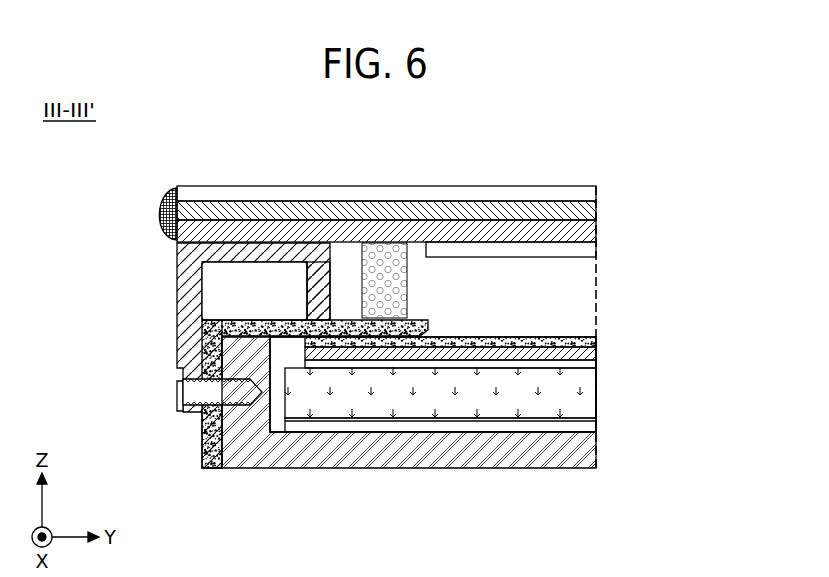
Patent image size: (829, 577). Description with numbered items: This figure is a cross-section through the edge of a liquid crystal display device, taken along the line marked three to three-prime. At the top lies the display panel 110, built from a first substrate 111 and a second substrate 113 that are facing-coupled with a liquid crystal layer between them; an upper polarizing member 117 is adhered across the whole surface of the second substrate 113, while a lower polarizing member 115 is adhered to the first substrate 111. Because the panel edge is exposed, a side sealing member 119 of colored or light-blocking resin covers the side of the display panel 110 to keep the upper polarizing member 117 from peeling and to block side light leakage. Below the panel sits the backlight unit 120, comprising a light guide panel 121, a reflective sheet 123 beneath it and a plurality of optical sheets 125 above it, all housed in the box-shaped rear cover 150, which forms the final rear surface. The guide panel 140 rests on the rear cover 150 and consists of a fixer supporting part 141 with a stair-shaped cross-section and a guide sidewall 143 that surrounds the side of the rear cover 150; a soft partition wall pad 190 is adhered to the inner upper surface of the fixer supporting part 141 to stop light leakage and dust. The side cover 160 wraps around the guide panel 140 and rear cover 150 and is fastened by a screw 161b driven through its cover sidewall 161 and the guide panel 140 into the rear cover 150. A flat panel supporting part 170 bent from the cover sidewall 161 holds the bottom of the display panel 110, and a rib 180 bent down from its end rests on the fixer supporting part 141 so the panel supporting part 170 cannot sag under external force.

The display panel 110 is at (451, 217).
The upper polarizing member 117 is at (597, 192).
The first substrate 111 is at (597, 213).
The second substrate 113 is at (597, 232).
The lower polarizing member 115 is at (597, 250).
The side sealing member 119 is at (161, 213).
The side cover 160 is at (227, 355).
The panel supporting part 170 is at (253, 260).
The rib 180 is at (307, 298).
The cover sidewall 161 is at (200, 352).
The screw 161b is at (177, 397).
The partition wall pad 190 is at (408, 287).
The rear cover 150 is at (597, 458).
The backlight unit 120 is at (498, 387).
The optical sheets 125 is at (597, 343).
The light guide panel 121 is at (597, 397).
The reflective sheet 123 is at (597, 425).
The guide panel 140 is at (257, 450).
The guide sidewall 143 is at (213, 433).
The fixer supporting part 141 is at (293, 334).